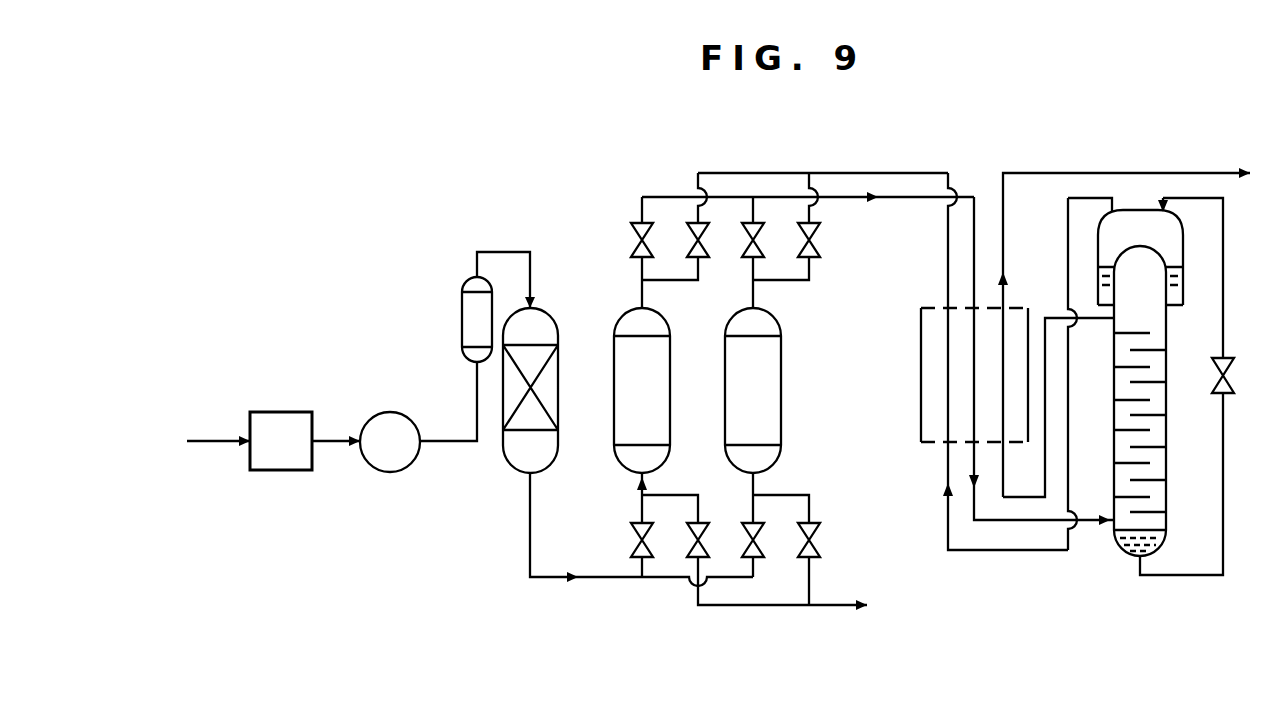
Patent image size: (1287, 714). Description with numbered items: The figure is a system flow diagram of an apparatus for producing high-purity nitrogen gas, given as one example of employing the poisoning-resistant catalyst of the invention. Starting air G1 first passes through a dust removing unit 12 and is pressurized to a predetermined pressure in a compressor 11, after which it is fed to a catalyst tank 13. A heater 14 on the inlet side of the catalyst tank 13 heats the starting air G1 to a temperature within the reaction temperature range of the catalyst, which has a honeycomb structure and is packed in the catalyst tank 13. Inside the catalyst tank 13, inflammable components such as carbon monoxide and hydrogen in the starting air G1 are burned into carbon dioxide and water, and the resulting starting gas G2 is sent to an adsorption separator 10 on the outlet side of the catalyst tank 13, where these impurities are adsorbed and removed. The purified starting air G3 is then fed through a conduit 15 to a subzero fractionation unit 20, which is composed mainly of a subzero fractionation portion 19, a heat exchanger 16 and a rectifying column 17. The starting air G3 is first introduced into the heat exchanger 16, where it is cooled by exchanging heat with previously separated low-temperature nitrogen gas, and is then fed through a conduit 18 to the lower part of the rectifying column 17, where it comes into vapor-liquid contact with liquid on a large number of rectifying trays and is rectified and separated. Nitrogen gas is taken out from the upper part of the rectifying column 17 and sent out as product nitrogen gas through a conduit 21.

The adsorption separator 10 is at (780, 383).
The compressor 11 is at (390, 472).
The dust removing unit 12 is at (278, 470).
The catalyst tank 13 is at (508, 470).
The heater 14 is at (462, 315).
The conduit 15 is at (852, 193).
The heat exchanger 16 is at (920, 443).
The rectifying column 17 is at (1160, 340).
The conduit 18 is at (1008, 550).
The subzero fractionation portion 19 is at (1167, 460).
The subzero fractionation unit 20 is at (1118, 558).
The conduit 21 is at (1133, 173).
The starting air G1 is at (200, 441).
The starting gas G2 is at (540, 578).
The starting air G3 is at (900, 199).